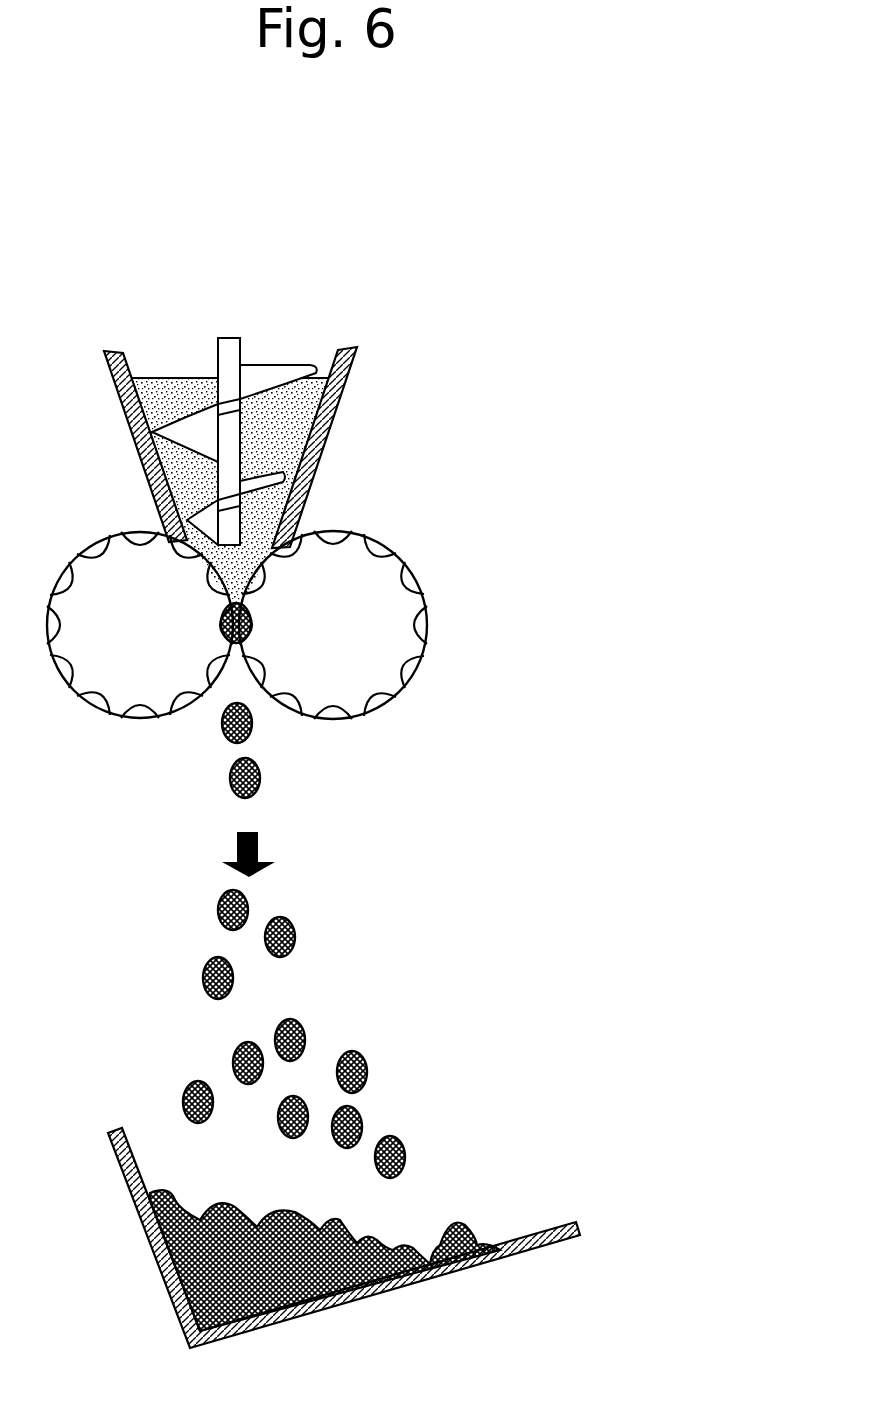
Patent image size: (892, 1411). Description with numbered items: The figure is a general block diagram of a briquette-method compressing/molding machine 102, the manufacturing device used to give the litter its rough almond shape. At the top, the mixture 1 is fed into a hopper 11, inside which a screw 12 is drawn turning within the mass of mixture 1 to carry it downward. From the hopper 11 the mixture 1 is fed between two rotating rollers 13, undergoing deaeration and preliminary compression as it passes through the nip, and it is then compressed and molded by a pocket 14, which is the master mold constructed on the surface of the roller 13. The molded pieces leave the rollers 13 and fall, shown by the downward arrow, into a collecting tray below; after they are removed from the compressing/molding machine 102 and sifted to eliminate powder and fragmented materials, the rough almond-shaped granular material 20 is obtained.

The mixture 1 is at (178, 400).
The hopper 11 is at (343, 392).
The screw feeder 12 is at (287, 373).
The rotating rollers 13 is at (417, 535).
The pocket 14 is at (395, 681).
The rough almond-shaped granular material 20 is at (428, 1055).
The briquette-method compressing/molding machine 102 is at (597, 392).